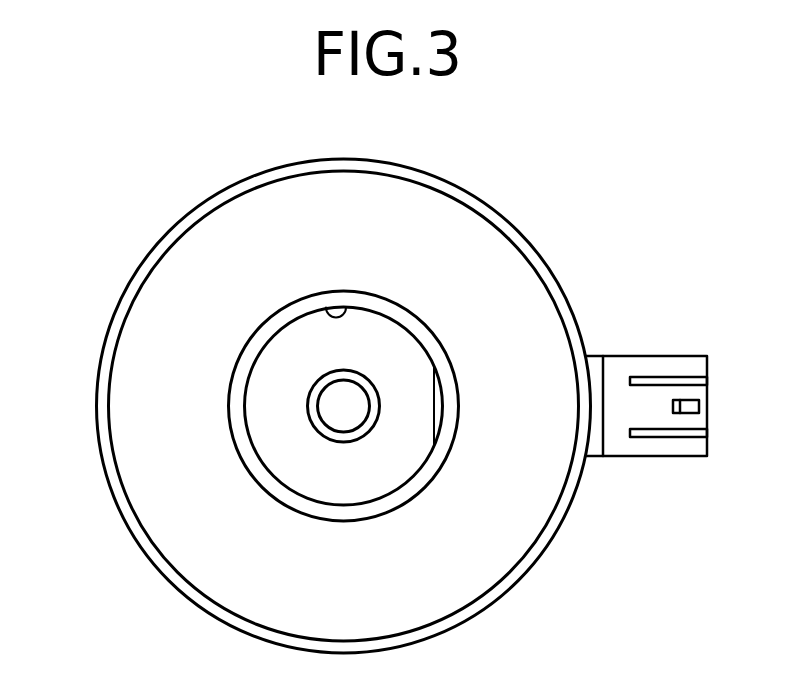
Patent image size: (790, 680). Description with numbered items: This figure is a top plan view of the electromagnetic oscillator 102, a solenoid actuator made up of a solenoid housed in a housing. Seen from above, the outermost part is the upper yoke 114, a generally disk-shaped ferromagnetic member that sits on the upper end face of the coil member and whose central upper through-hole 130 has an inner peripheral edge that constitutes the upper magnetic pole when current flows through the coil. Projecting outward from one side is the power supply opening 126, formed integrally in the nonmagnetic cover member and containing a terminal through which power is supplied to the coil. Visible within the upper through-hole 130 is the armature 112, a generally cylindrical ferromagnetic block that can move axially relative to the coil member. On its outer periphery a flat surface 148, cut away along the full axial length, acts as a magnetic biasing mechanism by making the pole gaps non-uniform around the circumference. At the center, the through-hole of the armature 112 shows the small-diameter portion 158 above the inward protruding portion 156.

The electromagnetic oscillator 102 is at (564, 200).
The armature 112 is at (278, 368).
The upper yoke 114 is at (527, 323).
The power supply opening 126 is at (693, 362).
The upper through-hole 130 is at (324, 302).
The flat surface 148 is at (433, 417).
The inward protruding portion 156 is at (323, 432).
The small-diameter portion 158 is at (311, 417).